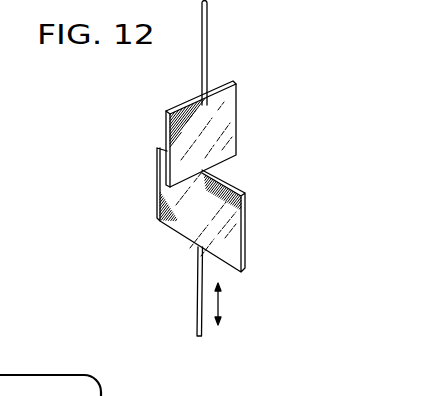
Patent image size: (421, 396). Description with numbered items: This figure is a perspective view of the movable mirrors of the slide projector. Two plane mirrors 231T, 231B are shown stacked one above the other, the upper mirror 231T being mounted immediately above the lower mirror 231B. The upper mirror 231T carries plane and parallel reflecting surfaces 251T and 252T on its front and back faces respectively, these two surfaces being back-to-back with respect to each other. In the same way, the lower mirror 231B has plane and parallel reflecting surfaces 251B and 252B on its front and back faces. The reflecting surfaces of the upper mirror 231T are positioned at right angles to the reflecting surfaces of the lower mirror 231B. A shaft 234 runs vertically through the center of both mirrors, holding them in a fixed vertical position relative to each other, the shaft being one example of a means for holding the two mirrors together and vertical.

The shaft 234 is at (208, 28).
The plane mirror 231T is at (221, 124).
The reflecting surface 251T is at (186, 103).
The reflecting surface 252T is at (222, 124).
The plane mirror 231B is at (206, 211).
The reflecting surface 251B is at (233, 186).
The reflecting surface 252B is at (192, 221).